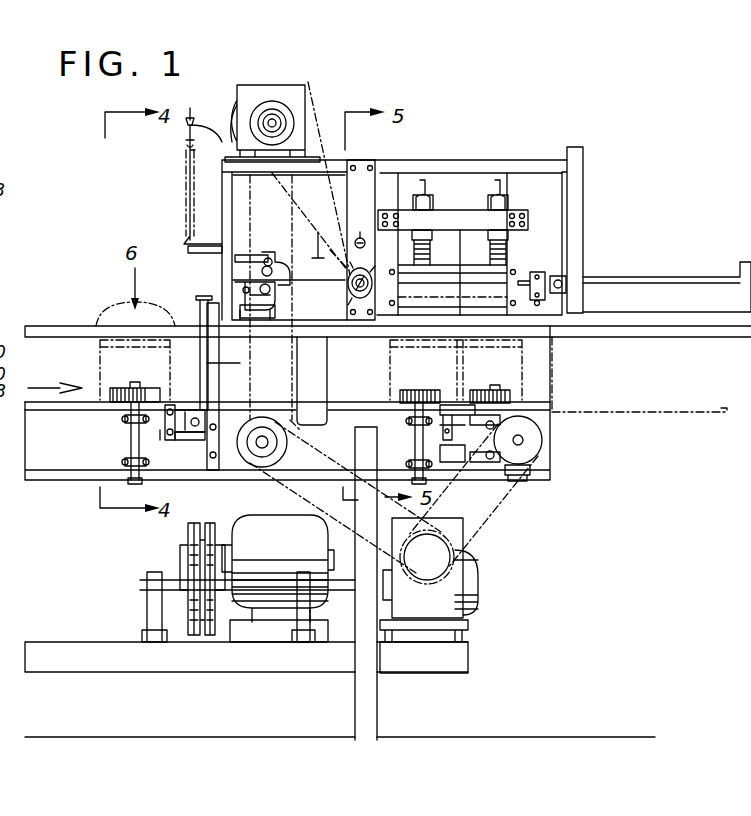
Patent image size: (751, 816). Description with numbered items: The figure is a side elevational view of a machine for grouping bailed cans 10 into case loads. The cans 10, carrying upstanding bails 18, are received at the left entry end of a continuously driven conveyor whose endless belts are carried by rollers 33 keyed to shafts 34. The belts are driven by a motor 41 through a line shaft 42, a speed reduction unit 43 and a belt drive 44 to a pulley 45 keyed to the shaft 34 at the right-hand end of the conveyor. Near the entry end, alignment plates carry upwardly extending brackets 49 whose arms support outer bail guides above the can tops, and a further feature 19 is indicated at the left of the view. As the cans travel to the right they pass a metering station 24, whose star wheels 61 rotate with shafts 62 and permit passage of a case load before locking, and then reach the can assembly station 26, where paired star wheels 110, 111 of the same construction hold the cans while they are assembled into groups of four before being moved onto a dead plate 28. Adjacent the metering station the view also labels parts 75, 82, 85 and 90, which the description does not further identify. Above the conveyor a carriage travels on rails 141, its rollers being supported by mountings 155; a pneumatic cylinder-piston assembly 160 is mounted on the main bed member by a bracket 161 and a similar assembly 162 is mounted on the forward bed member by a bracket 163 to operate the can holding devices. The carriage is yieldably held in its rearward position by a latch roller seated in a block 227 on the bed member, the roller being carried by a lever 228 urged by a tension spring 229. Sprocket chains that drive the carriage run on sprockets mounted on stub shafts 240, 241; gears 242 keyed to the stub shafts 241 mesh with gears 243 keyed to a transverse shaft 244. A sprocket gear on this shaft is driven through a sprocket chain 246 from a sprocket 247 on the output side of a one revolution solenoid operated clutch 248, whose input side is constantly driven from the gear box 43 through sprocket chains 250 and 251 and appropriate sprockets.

The cans 10 is at (100, 357).
The bails 18 is at (128, 313).
The feed direction 19 is at (12, 312).
The metering station 24 is at (122, 446).
The can assembly station 26 is at (465, 462).
The dead plate 28 is at (645, 414).
The rollers 33 is at (518, 468).
The shafts 34 is at (523, 442).
The motor 41 is at (276, 528).
The line shaft 42 is at (173, 582).
The speed reduction unit 43 is at (450, 580).
The belt drive 44 is at (502, 502).
The pulley 45 is at (536, 436).
The brackets 49 is at (217, 367).
The star wheels 61 is at (115, 392).
The shaft 62 is at (130, 440).
The bracket 75 is at (173, 405).
The bracket base 82 is at (194, 440).
The vertical rod 85 is at (217, 303).
The block 90 is at (258, 320).
The star wheel 110 is at (427, 394).
The star wheel 111 is at (486, 392).
The rails 141 is at (668, 283).
The mountings 155 is at (280, 293).
The pneumatic cylinder-piston assembly 160 is at (428, 190).
The bracket 161 is at (432, 266).
The pneumatic cylinder-piston assembly 162 is at (494, 190).
The bracket 163 is at (490, 266).
The block 227 is at (279, 262).
The lever 228 is at (206, 259).
The tension spring 229 is at (189, 173).
The stub shaft 240 is at (562, 285).
The stub shaft 241 is at (358, 320).
The gear 242 is at (346, 278).
The gear 243 is at (340, 252).
The shaft 244 is at (360, 236).
The sprocket chain 246 is at (318, 230).
The sprocket 247 is at (233, 124).
The one revolution solenoid operated clutch 248 is at (298, 100).
The sprocket chain 250 is at (265, 415).
The sprocket chain 251 is at (336, 466).